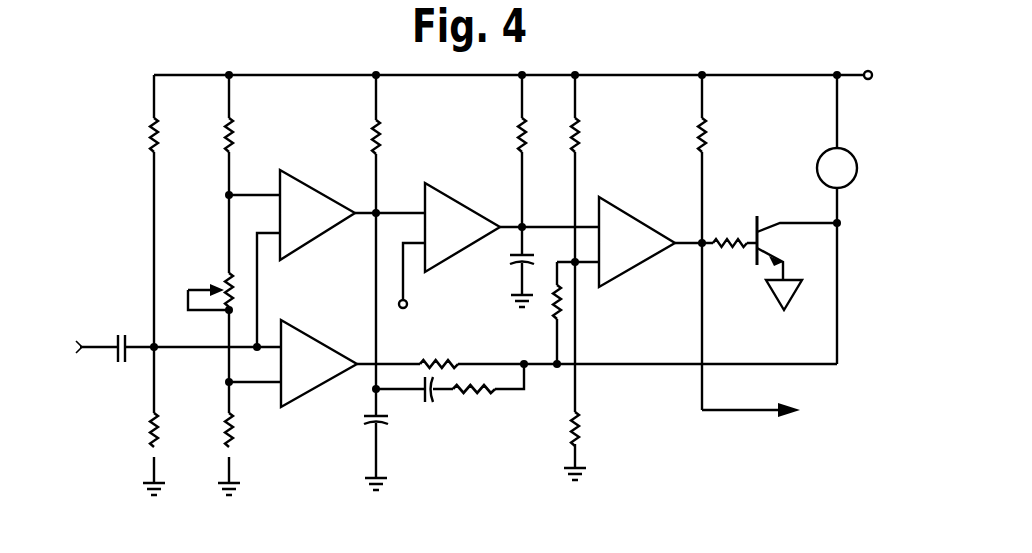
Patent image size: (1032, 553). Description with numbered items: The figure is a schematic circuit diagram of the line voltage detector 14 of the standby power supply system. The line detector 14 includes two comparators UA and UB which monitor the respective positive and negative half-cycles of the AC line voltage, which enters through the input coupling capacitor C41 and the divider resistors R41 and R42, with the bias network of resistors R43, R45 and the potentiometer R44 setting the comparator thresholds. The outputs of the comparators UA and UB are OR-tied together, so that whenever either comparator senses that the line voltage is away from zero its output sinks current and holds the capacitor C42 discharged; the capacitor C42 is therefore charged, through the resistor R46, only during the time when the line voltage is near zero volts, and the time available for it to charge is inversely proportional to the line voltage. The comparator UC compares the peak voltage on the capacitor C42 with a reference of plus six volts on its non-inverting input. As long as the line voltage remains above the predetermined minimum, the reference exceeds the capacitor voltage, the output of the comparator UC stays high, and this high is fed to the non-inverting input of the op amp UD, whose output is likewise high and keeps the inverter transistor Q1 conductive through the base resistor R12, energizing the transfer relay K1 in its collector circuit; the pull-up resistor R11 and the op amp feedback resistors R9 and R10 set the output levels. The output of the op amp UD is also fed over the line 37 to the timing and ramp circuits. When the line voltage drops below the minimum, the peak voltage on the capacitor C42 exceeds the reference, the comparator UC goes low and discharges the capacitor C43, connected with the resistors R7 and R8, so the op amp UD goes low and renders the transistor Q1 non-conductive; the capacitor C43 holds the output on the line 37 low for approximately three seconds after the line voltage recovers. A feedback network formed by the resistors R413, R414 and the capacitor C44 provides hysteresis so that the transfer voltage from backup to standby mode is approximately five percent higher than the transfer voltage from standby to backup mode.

The line voltage detector circuit 14 is at (80, 182).
The line 37 is at (720, 412).
The resistor R41 100k R41 is at (130, 137).
The resistor R42 100K R42 is at (129, 434).
The resistor R43 100k R43 is at (252, 137).
The potentiometer R44 25k R44 is at (210, 270).
The resistor R45 100K R45 is at (254, 434).
The resistor R46 is at (395, 143).
The resistor R7 4.7µ R7 is at (540, 139).
The resistor R8 is at (588, 135).
The resistor R9 is at (545, 313).
The resistor R10 is at (596, 431).
The resistor R11 is at (721, 135).
The resistor R12 is at (728, 256).
The resistor R413 is at (439, 349).
The resistor R414 is at (476, 401).
The capacitor C41 47µf C41 is at (127, 344).
The capacitor C42 is at (360, 432).
The capacitor C43 is at (537, 231).
The capacitor C44 is at (427, 402).
The comparator UA is at (317, 215).
The comparator UB is at (319, 363).
The comparator UC is at (462, 227).
The op amp UD is at (637, 242).
The transfer relay K1 is at (837, 168).
The inverter transistor Q1 is at (797, 263).